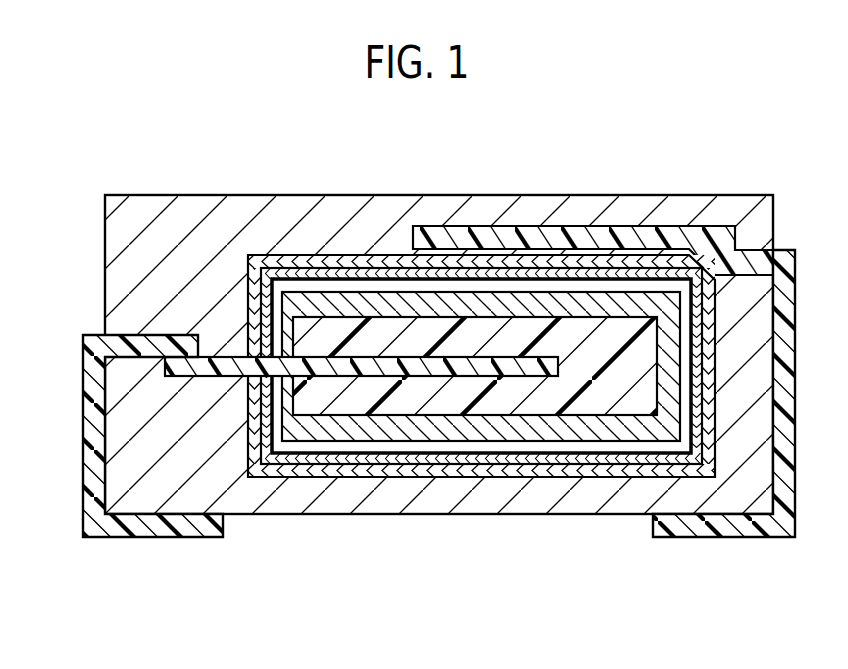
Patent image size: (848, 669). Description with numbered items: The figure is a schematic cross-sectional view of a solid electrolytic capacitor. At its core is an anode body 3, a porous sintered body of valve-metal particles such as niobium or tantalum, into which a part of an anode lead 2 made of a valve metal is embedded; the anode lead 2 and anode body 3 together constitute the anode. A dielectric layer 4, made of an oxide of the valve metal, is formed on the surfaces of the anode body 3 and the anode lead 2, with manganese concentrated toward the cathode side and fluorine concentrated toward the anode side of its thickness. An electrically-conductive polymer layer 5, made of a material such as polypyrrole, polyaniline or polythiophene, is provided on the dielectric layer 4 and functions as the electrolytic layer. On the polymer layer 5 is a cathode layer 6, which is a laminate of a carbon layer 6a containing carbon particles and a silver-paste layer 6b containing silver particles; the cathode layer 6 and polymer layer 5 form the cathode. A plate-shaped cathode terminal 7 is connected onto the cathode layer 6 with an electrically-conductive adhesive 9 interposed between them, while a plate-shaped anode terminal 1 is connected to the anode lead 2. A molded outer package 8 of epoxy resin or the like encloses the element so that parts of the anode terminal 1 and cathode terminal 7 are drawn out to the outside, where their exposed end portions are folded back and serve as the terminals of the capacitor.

The anode terminal 1 is at (147, 530).
The anode lead 2 is at (190, 367).
The anode body 3 is at (525, 335).
The dielectric layer 4 is at (374, 310).
The electrically-conductive polymer layer 5 is at (352, 288).
The cathode layer 6 is at (465, 286).
The carbon layer 6a is at (275, 276).
The silver-paste layer 6b is at (254, 262).
The cathode terminal 7 is at (727, 527).
The molded outer package 8 is at (135, 228).
The electrically-conductive adhesive 9 is at (628, 246).